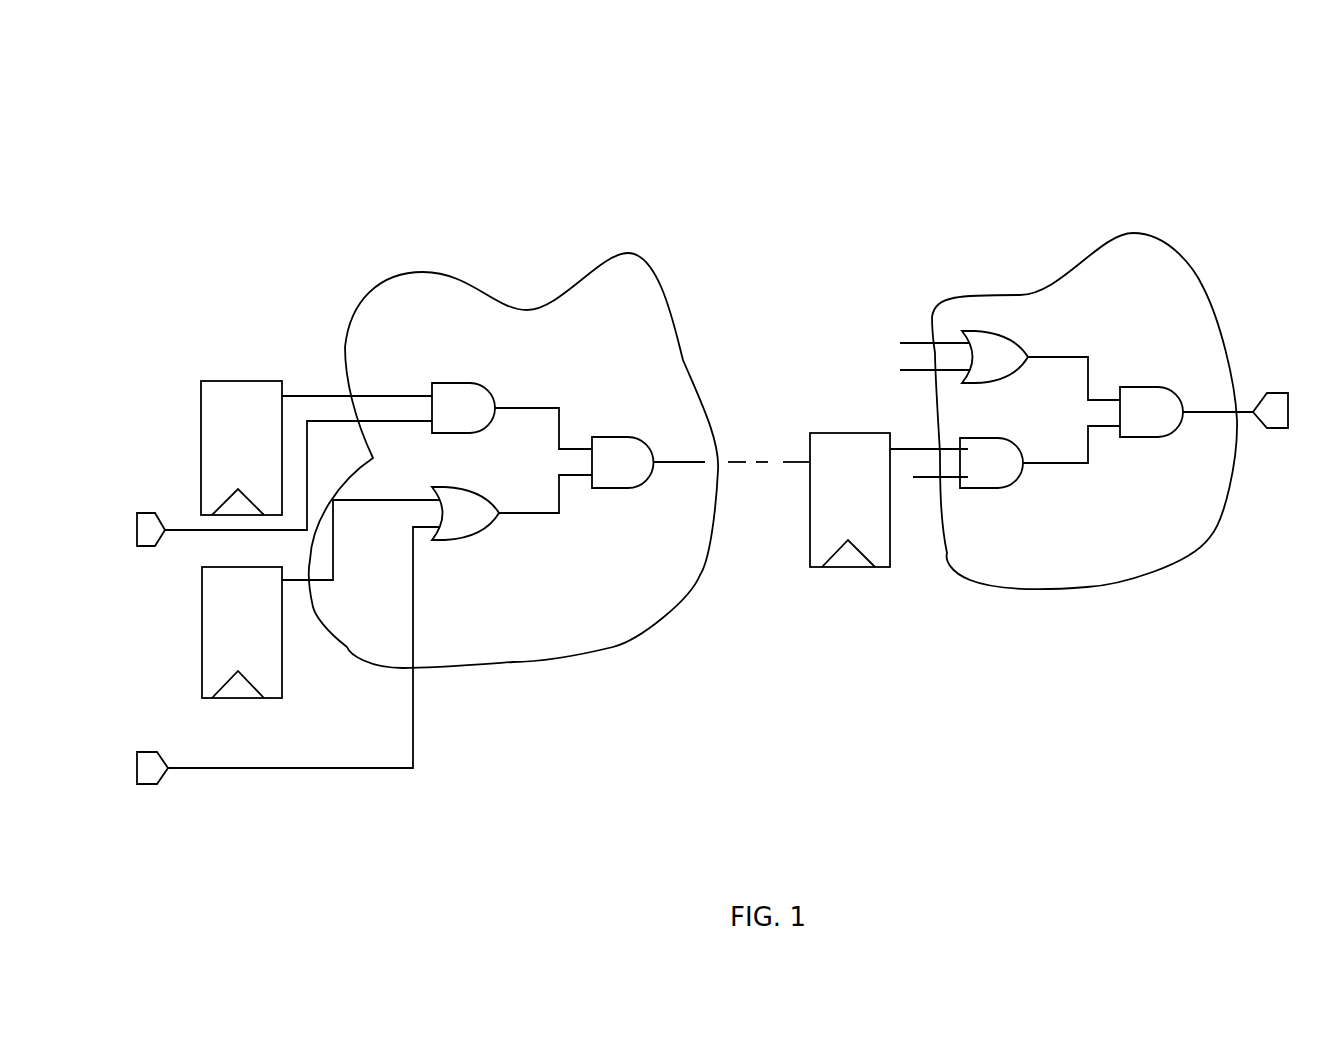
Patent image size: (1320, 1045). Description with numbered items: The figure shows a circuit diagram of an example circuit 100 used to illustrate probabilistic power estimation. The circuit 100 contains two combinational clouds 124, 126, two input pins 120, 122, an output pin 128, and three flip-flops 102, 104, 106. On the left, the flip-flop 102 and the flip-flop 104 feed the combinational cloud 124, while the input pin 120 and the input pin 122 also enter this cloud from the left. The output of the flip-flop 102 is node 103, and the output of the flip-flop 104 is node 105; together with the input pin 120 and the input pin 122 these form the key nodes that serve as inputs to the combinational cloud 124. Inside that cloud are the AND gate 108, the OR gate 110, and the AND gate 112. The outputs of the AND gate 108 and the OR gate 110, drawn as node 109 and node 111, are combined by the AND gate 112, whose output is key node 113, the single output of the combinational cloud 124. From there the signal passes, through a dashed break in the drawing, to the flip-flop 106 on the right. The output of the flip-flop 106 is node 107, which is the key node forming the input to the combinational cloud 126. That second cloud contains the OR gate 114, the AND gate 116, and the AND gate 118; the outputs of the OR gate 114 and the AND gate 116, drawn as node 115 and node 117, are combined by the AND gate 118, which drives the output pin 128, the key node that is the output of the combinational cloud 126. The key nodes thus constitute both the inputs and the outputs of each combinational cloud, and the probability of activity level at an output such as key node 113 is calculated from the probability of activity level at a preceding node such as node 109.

The circuit 100 is at (1088, 121).
The flip-flop 102 is at (241, 448).
The flip-flop 104 is at (242, 632).
The flip-flop 106 is at (850, 500).
The AND gate 108 is at (463, 408).
The OR gate 110 is at (465, 513).
The AND gate 112 is at (623, 462).
The OR gate 114 is at (995, 357).
The AND gate 116 is at (991, 463).
The AND gate 118 is at (1151, 412).
The node 103 is at (315, 381).
The node 105 is at (300, 596).
The node 107 is at (901, 434).
The node 109 is at (526, 389).
The node 111 is at (534, 528).
The key node 113 is at (672, 476).
The node 115 is at (1069, 336).
The node 117 is at (1063, 477).
The input pin 120 is at (179, 545).
The input pin 122 is at (179, 783).
The combinational cloud 124 is at (547, 679).
The combinational cloud 126 is at (1046, 601).
The output pin 128 is at (1257, 429).